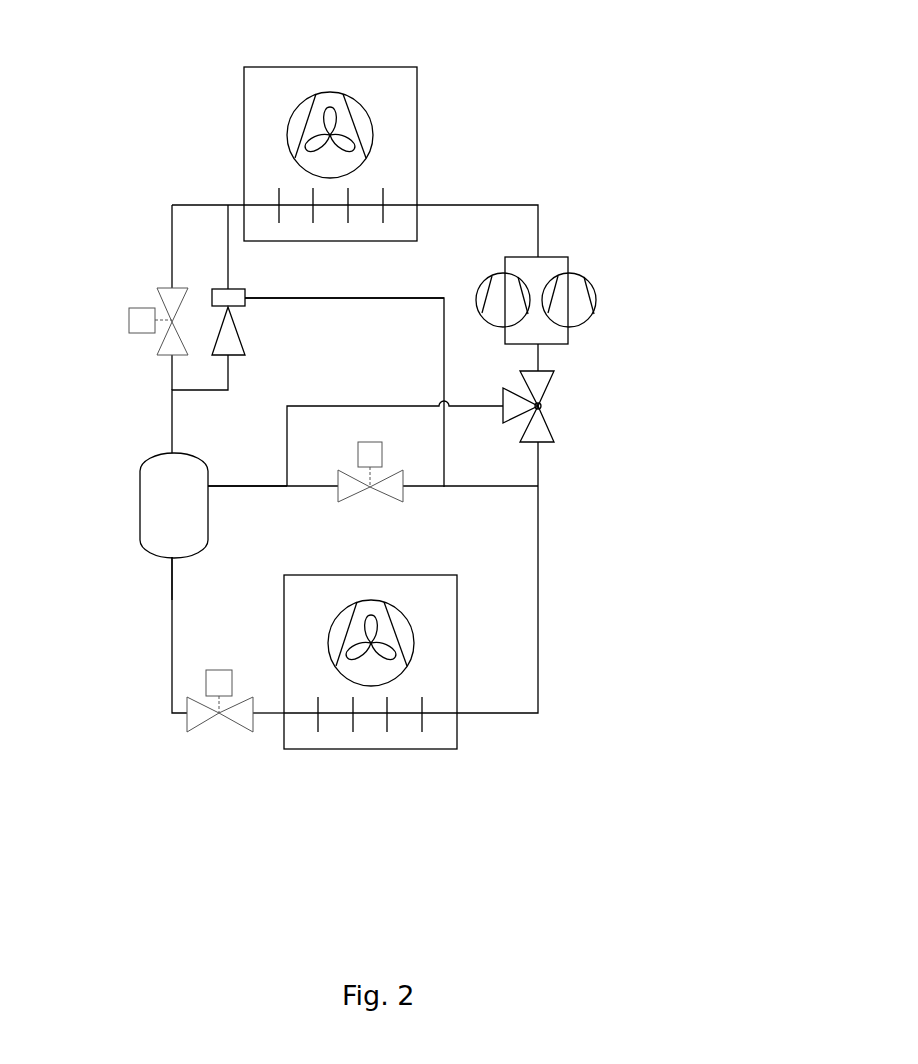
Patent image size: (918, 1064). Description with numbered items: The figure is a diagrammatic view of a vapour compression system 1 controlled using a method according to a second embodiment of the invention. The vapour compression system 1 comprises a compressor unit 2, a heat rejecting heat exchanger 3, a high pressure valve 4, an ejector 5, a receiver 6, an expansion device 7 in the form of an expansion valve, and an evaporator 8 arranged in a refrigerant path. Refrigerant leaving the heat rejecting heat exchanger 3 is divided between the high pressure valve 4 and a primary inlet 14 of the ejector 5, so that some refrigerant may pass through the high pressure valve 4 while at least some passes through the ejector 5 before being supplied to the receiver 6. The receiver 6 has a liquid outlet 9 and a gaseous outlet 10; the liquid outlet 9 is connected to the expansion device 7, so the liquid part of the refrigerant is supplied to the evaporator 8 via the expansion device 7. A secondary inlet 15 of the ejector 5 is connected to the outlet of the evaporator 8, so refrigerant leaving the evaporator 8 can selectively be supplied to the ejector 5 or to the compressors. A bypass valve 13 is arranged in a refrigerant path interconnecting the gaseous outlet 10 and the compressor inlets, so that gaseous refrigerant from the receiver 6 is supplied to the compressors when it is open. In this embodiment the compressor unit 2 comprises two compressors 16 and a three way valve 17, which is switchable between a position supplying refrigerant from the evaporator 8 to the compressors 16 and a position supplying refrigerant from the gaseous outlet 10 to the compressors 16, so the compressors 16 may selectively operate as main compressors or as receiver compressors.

The vapour compression system 1 is at (548, 80).
The compressor unit 2 is at (611, 260).
The heat rejecting heat exchanger 3 is at (376, 78).
The high pressure valve 4 is at (170, 302).
The ejector 5 is at (250, 270).
The receiver 6 is at (153, 480).
The expansion device 7 is at (197, 715).
The evaporator 8 is at (427, 738).
The liquid outlet 9 is at (168, 558).
The gaseous outlet 10 is at (207, 486).
The bypass valve 13 is at (382, 483).
The primary inlet 14 is at (228, 288).
The secondary inlet 15 is at (245, 298).
The compressors 16 is at (503, 293).
The three way valve 17 is at (537, 422).